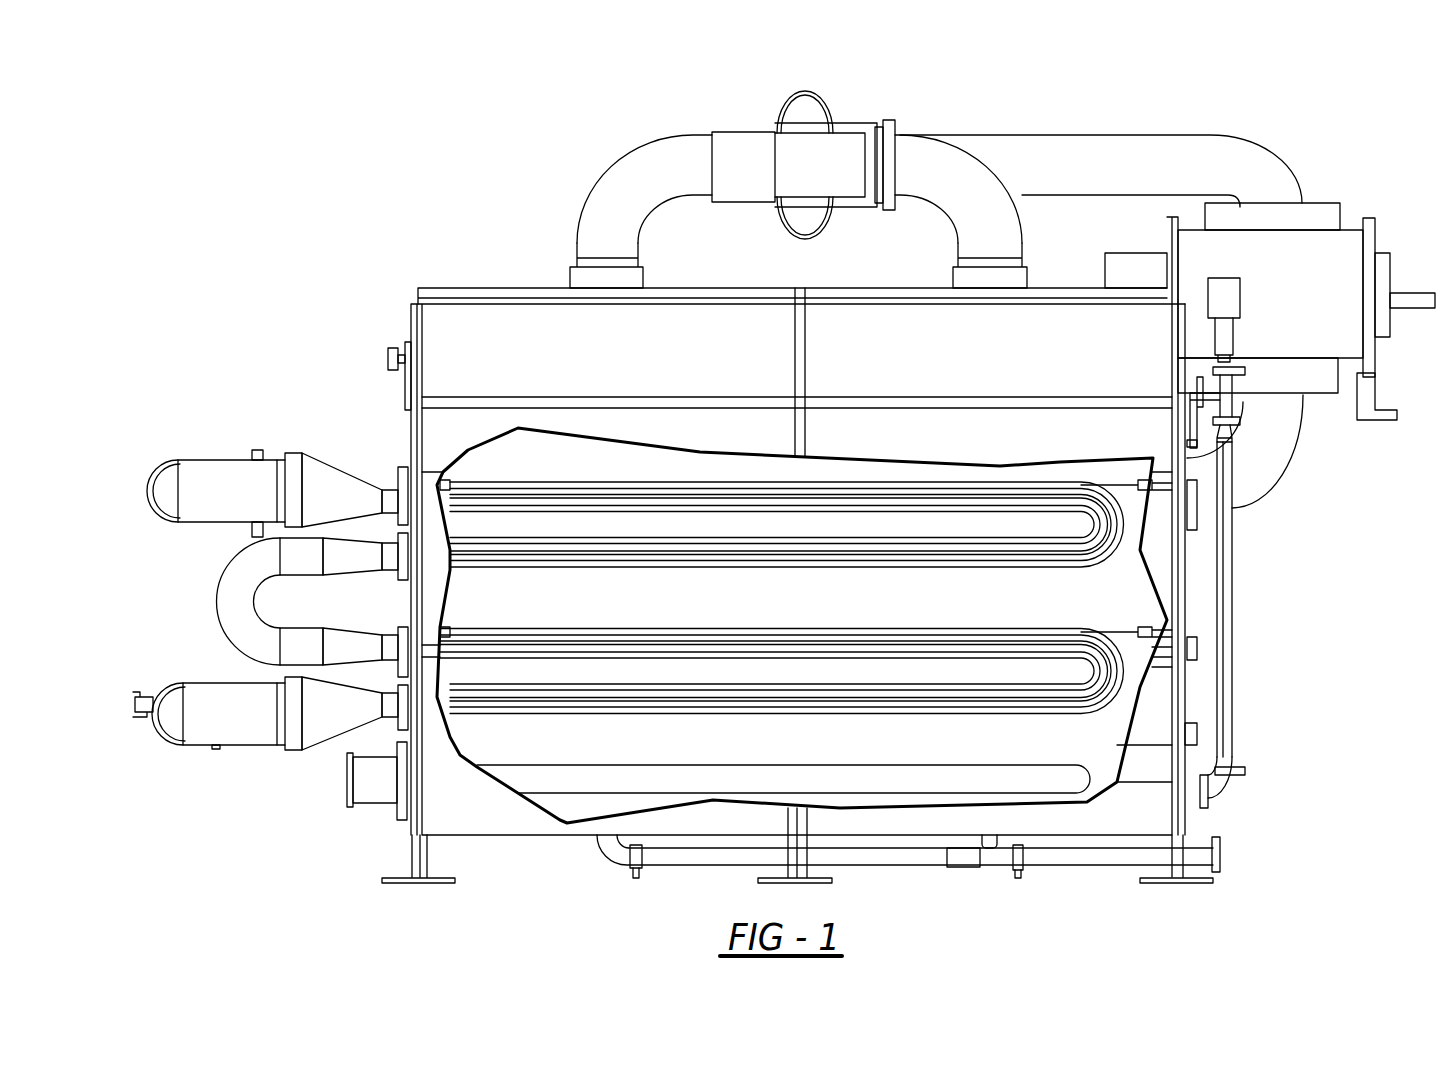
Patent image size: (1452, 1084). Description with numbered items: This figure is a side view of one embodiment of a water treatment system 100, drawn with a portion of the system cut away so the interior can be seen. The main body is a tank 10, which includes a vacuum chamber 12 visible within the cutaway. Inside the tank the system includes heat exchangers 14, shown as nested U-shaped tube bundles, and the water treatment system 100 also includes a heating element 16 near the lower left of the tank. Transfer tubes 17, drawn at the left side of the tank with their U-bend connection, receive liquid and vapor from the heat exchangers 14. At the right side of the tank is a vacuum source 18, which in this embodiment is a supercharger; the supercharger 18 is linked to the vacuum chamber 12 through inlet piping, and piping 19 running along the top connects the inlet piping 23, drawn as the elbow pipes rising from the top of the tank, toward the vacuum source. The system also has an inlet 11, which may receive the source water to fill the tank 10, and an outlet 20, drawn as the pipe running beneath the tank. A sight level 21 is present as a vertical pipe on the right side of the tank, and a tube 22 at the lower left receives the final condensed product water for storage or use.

The water treatment system 100 is at (413, 95).
The tank 10 is at (487, 288).
The inlet 11 is at (393, 363).
The vacuum chamber 12 is at (455, 337).
The heat exchangers 14 is at (1117, 543).
The heating element 16 is at (370, 803).
The transfer tubes 17 is at (152, 508).
The vacuum source 18 is at (1377, 227).
The piping 19 is at (1260, 147).
The outlet 20 is at (1220, 863).
The sight level 21 is at (1232, 525).
The tube 22 is at (215, 749).
The inlet piping 23 is at (623, 160).